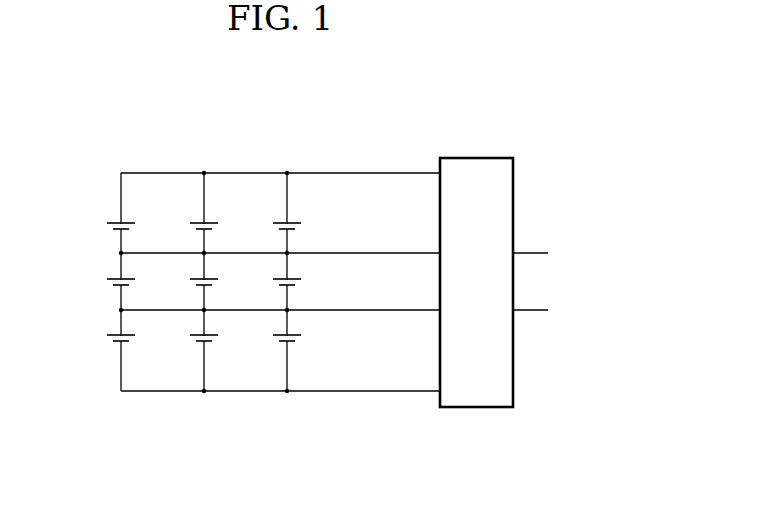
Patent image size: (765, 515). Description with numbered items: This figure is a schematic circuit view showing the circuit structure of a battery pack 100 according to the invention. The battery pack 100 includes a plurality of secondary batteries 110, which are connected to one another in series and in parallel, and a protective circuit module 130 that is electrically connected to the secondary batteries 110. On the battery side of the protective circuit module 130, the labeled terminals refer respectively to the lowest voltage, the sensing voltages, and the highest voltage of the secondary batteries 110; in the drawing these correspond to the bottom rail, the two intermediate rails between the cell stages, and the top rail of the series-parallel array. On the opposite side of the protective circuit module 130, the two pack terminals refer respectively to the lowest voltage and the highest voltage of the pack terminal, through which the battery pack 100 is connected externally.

The battery pack 100 is at (170, 127).
The secondary battery 110 is at (108, 222).
The protective circuit module 130 is at (490, 157).